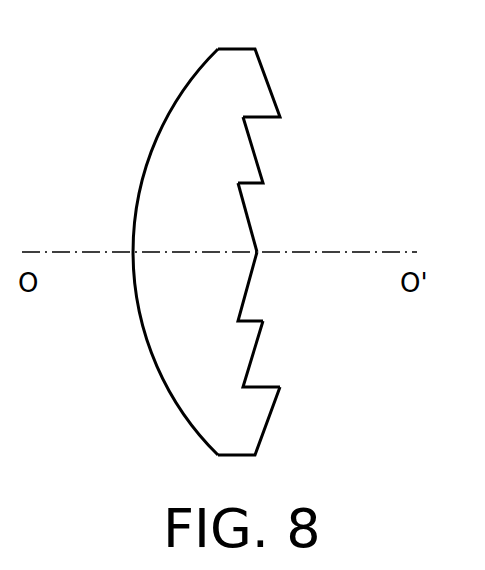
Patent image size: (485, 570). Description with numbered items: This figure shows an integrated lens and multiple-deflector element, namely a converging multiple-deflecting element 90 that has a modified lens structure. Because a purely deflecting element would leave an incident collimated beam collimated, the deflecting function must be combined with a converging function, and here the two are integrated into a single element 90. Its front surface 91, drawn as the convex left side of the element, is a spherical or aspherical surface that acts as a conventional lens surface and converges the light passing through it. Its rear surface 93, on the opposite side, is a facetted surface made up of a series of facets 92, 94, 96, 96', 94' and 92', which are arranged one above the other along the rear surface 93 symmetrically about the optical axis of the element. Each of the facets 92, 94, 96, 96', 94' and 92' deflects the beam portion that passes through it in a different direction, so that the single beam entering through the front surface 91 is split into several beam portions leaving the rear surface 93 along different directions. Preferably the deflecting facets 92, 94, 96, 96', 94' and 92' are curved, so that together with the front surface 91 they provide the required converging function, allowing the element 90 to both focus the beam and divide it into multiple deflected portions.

The converging multiple-deflecting element 90 is at (248, 28).
The front surface 91 is at (170, 108).
The rear surface 93 is at (293, 57).
The facet 92 is at (281, 83).
The facet 94 is at (283, 150).
The facet 96 is at (280, 217).
The facet 96' is at (283, 286).
The facet 94' is at (289, 354).
The facet 92' is at (284, 421).